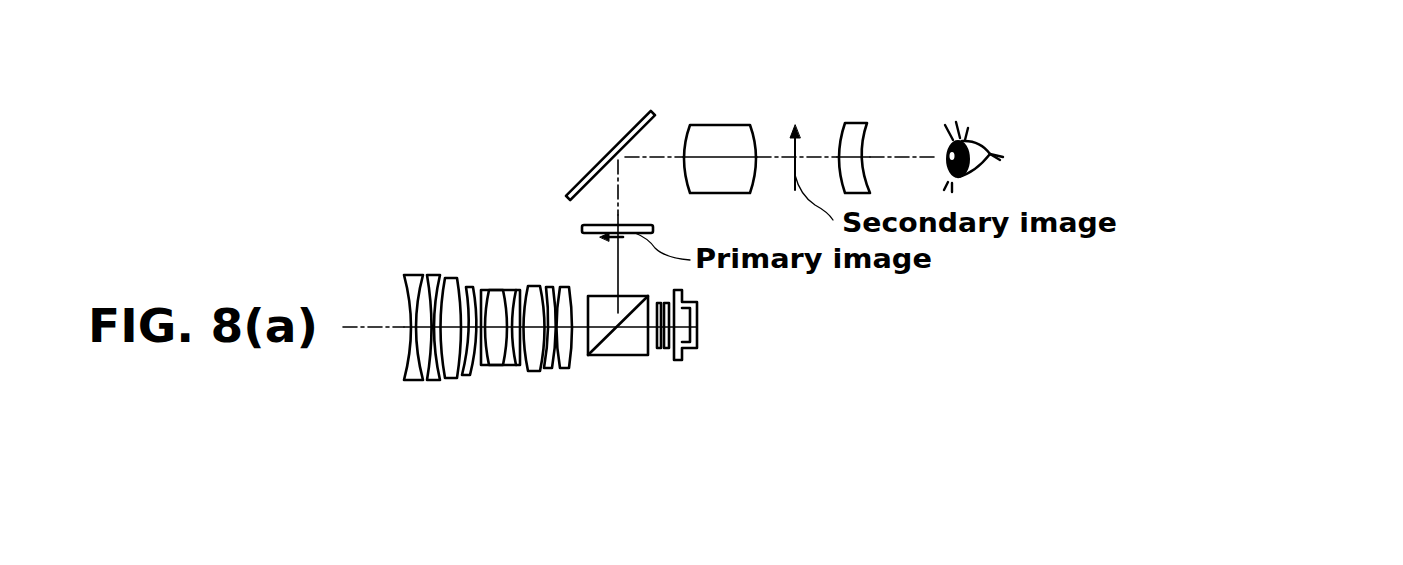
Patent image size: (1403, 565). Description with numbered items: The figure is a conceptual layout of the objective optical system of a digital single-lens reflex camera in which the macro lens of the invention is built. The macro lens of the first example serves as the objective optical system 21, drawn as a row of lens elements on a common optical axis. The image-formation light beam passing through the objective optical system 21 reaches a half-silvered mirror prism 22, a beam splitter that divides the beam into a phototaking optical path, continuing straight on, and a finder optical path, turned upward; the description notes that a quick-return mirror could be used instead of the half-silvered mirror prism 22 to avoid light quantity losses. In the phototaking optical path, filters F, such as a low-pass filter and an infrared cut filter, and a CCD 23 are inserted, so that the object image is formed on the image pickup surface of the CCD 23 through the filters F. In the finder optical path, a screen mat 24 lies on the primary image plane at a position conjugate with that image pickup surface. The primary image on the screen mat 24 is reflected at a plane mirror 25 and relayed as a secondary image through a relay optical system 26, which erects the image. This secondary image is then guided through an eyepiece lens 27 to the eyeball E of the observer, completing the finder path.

The objective optical system 21 is at (464, 378).
The half-silvered mirror prism 22 is at (620, 355).
The CCD 23 is at (697, 323).
The screen mat 24 is at (582, 228).
The plane mirror 25 is at (622, 141).
The relay optical system 26 is at (717, 135).
The eyepiece lens 27 is at (852, 123).
The filters F is at (663, 348).
The eyeball E is at (990, 154).